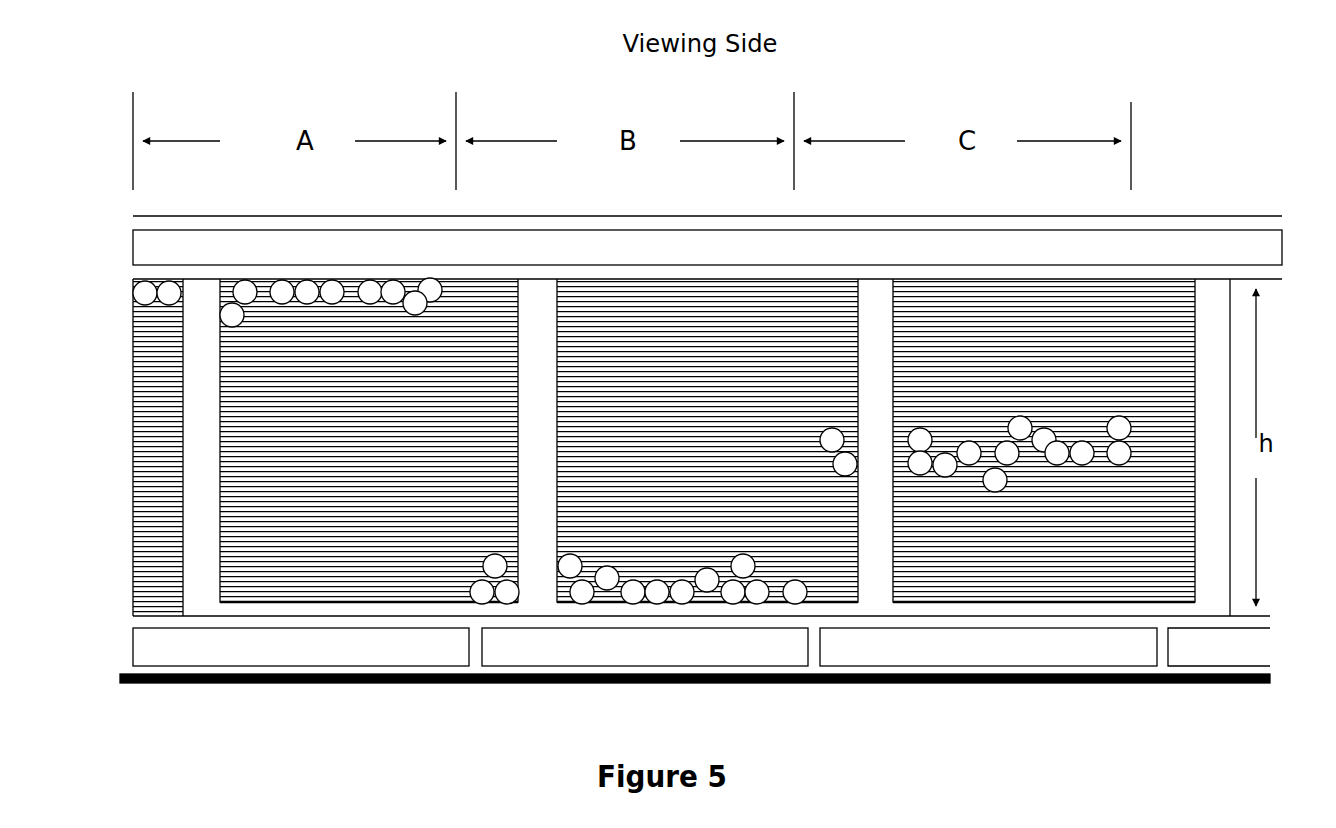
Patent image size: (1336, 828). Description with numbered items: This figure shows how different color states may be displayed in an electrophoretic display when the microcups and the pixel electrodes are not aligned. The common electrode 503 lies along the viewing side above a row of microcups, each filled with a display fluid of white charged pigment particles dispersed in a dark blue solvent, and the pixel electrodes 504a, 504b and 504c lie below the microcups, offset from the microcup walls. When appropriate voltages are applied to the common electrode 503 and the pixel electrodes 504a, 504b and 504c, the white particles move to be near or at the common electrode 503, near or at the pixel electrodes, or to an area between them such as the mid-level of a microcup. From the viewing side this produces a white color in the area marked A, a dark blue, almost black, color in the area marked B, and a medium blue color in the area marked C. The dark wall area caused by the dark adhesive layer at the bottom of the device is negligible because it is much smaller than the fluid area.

The common electrode 503 is at (707, 247).
The pixel electrode 504a is at (301, 647).
The pixel electrode 504b is at (645, 647).
The pixel electrode 504c is at (988, 647).